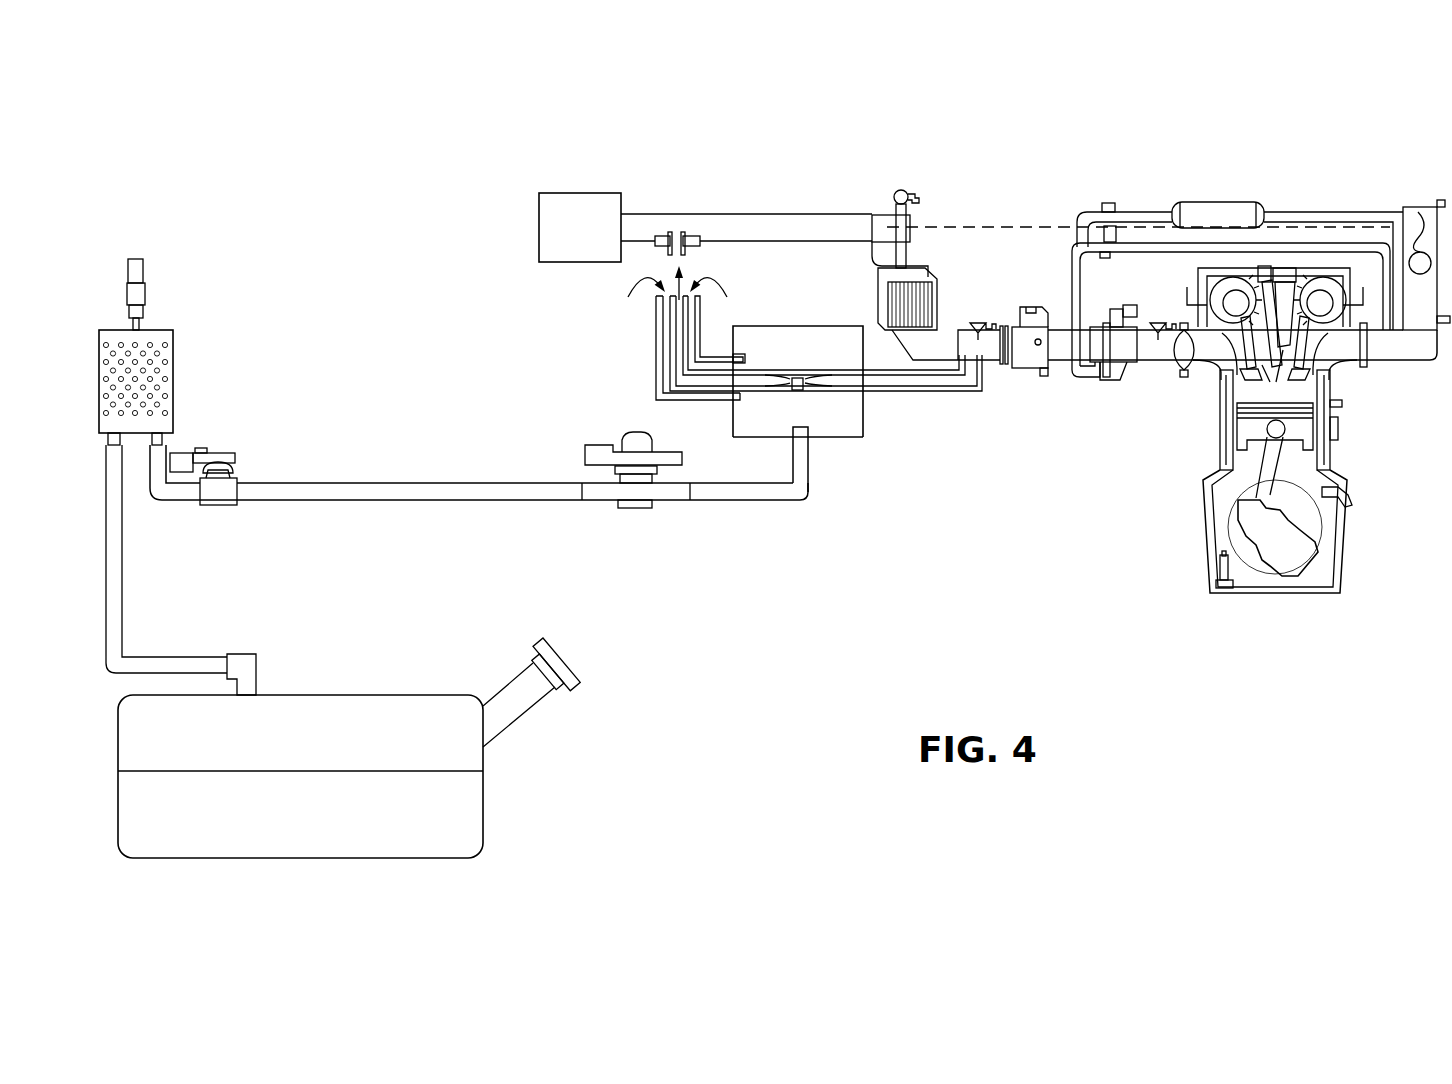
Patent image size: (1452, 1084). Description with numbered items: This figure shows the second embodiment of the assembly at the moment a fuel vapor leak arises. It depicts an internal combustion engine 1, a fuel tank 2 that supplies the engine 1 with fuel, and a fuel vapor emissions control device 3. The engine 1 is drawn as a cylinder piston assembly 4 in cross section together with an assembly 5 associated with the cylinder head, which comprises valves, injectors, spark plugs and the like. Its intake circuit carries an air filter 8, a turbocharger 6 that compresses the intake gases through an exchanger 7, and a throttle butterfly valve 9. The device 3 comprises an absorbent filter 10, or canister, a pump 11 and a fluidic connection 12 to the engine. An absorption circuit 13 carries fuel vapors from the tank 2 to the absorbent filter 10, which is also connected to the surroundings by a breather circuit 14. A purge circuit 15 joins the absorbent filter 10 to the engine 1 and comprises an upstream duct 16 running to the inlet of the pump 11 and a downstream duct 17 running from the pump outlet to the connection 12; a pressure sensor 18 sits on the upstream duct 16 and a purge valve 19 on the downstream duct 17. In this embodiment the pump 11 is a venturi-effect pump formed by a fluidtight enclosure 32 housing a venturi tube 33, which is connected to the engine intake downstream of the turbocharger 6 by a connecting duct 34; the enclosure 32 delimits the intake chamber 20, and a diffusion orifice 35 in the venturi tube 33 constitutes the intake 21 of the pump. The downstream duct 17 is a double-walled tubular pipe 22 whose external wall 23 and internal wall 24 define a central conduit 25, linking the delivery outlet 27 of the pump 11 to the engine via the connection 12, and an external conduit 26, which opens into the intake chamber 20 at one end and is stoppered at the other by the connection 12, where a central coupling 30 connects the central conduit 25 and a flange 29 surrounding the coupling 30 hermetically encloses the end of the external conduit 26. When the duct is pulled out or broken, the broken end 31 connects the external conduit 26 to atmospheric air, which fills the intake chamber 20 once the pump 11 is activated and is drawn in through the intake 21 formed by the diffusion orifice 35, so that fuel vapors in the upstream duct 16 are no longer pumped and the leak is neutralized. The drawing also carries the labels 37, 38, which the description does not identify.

The internal combustion engine 1 is at (1360, 422).
The fuel tank 2 is at (467, 815).
The fuel vapor emissions control device 3 is at (328, 236).
The cylinder piston assembly 4 is at (1247, 460).
The cylinder head assembly 5 is at (1314, 191).
The turbocharger 6 is at (912, 215).
The exchanger 7 is at (899, 335).
The air filter 8 is at (547, 218).
The throttle butterfly valve 9 is at (1030, 355).
The absorbent filter 10 is at (170, 404).
The pump 11 is at (820, 457).
The fluidic connection 12 is at (657, 242).
The absorption circuit 13 is at (158, 603).
The breather circuit 14 is at (166, 290).
The purge circuit 15 is at (733, 572).
The upstream duct 16 is at (758, 523).
The downstream duct 17 is at (594, 391).
The pressure sensor 18 is at (220, 458).
The purge valve 19 is at (634, 505).
The intake chamber 20 is at (837, 332).
The intake 21 is at (805, 388).
The double-walled tubular pipe 22 is at (641, 356).
The external wall 23 is at (660, 332).
The internal wall 24 is at (672, 298).
The central conduit 25 is at (687, 380).
The external conduit 26 is at (665, 373).
The delivery outlet 27 is at (737, 378).
The flange 29 is at (690, 236).
The central coupling 30 is at (670, 234).
The broken end 31 is at (692, 280).
The fluidtight enclosure 32 is at (833, 440).
The venturi tube 33 is at (778, 375).
The connecting duct 34 is at (960, 380).
The diffusion orifice 35 is at (798, 380).
The upper wall 37 is at (730, 373).
The lower wall 38 is at (730, 385).